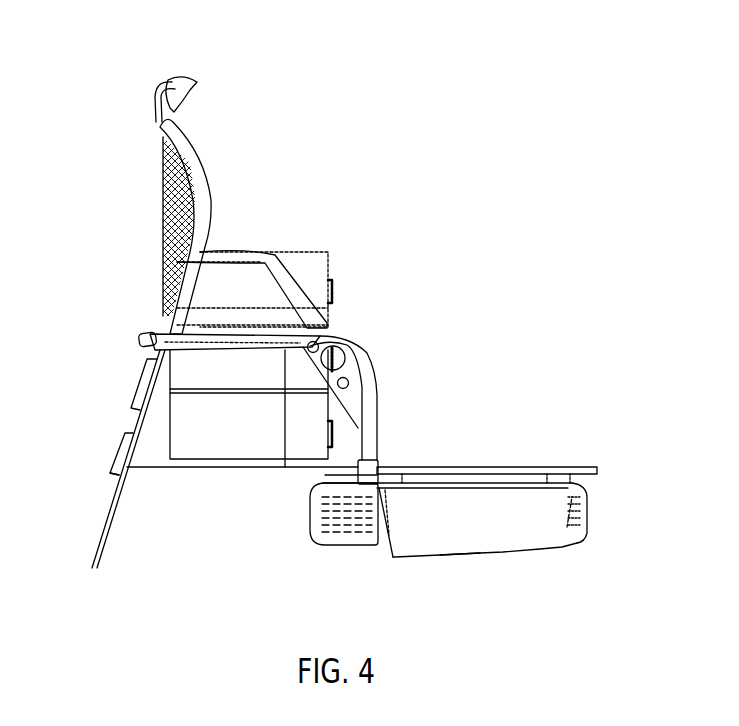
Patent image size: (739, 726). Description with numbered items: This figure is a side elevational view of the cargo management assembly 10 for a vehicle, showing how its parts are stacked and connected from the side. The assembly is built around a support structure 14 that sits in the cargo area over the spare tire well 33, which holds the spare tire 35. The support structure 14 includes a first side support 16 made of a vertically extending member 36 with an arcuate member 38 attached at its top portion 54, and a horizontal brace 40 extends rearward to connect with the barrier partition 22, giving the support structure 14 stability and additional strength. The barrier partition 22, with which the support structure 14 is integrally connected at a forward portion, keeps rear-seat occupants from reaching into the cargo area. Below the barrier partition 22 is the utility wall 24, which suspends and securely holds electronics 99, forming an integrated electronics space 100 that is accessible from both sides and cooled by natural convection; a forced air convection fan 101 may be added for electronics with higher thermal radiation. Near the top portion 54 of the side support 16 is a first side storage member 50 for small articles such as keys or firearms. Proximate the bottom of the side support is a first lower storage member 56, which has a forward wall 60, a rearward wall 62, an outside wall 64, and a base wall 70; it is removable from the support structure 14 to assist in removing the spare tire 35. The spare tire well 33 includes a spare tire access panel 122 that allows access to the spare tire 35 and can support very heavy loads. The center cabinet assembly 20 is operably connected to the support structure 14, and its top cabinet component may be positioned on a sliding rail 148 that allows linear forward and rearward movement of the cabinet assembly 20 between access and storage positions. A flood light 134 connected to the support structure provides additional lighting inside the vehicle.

The cargo management assembly 10 is at (387, 231).
The support structure 14 is at (172, 317).
The first side support 16 is at (366, 352).
The cabinet assembly 20 is at (290, 250).
The barrier partition 22 is at (167, 200).
The utility wall 24 is at (104, 530).
The spare tire well 33 is at (587, 481).
The spare tire 35 is at (587, 507).
The vertically extending member 36 is at (370, 430).
The arcuate member 38 is at (353, 343).
The horizontal brace 40 is at (220, 331).
The first side storage member 50 is at (234, 349).
The top portion 54 is at (202, 308).
The first lower storage member 56 is at (498, 527).
The forward wall 60 is at (390, 533).
The rearward wall 62 is at (577, 523).
The outside wall 64 is at (445, 527).
The base wall 70 is at (528, 550).
The electronics 99 is at (119, 468).
The integrated electronics space 100 is at (118, 445).
The forced air convection fan 101 is at (143, 376).
The spare tire access panel 122 is at (522, 467).
The flood light 134 is at (187, 75).
The sliding rail 148 is at (257, 317).